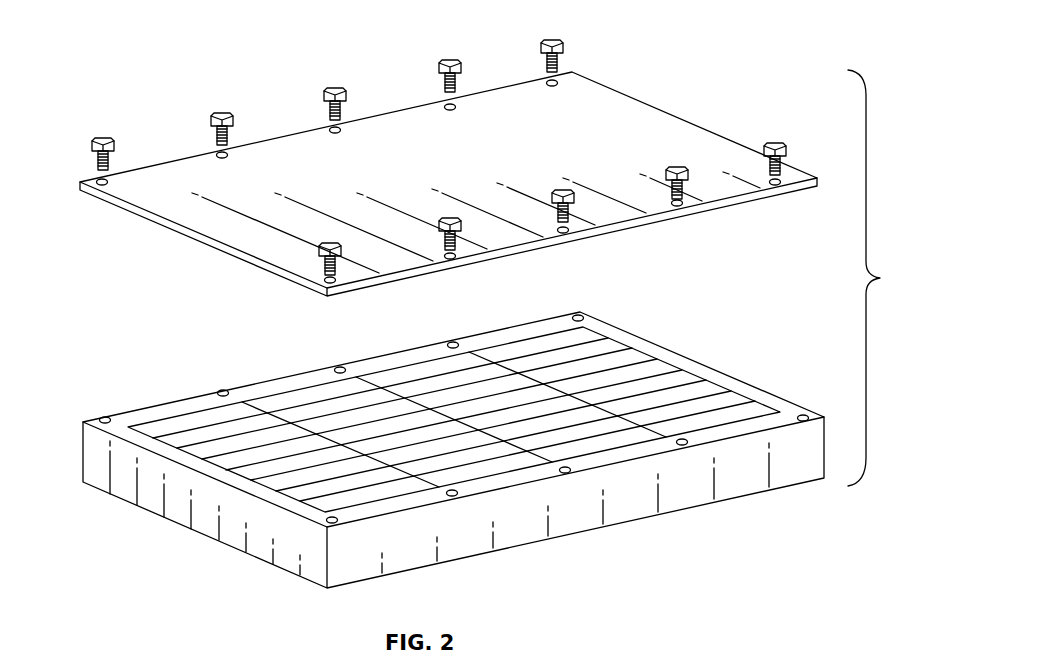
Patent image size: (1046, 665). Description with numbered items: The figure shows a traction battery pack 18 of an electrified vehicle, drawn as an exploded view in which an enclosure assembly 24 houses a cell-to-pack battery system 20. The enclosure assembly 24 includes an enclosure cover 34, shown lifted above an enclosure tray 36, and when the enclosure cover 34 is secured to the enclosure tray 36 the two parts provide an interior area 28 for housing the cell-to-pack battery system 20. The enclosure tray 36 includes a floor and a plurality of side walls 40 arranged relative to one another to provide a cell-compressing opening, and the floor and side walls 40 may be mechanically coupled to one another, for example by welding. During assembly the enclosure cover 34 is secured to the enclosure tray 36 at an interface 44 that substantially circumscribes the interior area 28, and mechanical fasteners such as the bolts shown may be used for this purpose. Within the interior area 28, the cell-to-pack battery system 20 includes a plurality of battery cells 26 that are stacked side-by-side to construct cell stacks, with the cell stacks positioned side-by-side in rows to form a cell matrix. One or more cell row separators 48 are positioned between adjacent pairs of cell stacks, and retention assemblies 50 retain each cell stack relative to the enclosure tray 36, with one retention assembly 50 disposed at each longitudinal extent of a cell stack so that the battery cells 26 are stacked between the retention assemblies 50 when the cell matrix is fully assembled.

The traction battery pack 18 is at (884, 278).
The cell-to-pack battery system 20 is at (465, 445).
The enclosure assembly 24 is at (76, 204).
The battery cells 26 is at (158, 425).
The interior area 28 is at (624, 284).
The enclosure cover 34 is at (272, 160).
The enclosure tray 36 is at (79, 442).
The side walls 40 is at (252, 378).
The interface 44 is at (104, 136).
The cell row separators 48 is at (252, 490).
The retention assemblies 50 is at (215, 420).